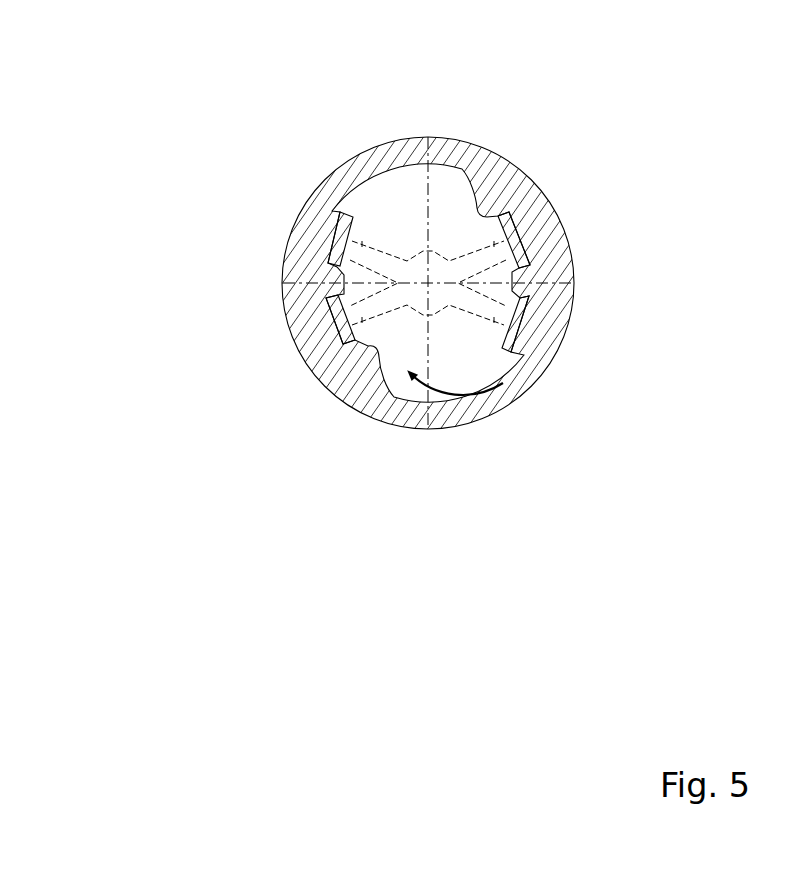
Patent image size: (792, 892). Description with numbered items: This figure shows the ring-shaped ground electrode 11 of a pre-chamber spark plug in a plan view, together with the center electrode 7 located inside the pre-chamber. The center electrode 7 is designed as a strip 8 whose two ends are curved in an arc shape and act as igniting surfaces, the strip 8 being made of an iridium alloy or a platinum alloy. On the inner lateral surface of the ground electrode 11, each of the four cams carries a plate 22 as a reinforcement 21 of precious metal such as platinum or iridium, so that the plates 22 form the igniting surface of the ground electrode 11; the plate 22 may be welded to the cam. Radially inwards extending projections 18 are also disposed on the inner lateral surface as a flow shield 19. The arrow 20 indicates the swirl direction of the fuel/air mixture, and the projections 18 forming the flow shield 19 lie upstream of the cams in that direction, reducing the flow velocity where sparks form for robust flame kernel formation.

The ground electrode 11 is at (338, 180).
The center electrode 7 is at (424, 182).
The strip 8 is at (418, 238).
The projections 18 is at (400, 302).
The flow shield 19 is at (480, 217).
The reinforcement 21 is at (391, 312).
The plate 22 is at (342, 237).
The arrow 20 is at (448, 393).